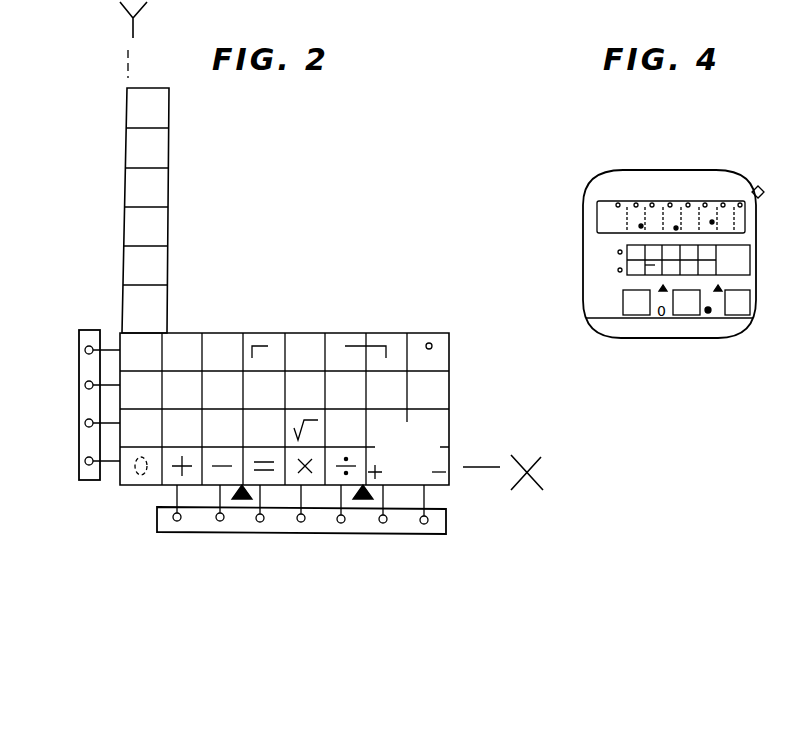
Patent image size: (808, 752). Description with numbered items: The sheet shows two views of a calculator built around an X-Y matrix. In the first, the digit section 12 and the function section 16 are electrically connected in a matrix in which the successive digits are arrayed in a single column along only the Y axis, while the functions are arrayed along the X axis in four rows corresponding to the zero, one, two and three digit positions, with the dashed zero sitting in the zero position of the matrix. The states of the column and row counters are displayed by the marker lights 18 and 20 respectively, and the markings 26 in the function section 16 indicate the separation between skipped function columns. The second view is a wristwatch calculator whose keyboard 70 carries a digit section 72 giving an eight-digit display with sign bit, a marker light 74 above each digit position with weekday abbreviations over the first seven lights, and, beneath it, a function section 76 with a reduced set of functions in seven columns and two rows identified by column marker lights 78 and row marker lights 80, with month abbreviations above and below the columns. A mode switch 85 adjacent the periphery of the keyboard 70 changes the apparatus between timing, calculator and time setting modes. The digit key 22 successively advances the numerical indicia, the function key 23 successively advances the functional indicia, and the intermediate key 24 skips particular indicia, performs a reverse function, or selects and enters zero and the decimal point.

In FIG. 2, the digit section 12 is at (168, 160).
In FIG. 2, the function section 16 is at (343, 334).
In FIG. 2, the column marker light 18 is at (190, 532).
In FIG. 2, the row marker light 20 is at (80, 433).
In FIG. 2, the markings 26 is at (242, 502).
In FIG. 4, the markings 26 is at (660, 290).
In FIG. 4, the keyboard 70 is at (715, 170).
In FIG. 4, the digit section 72 is at (598, 222).
In FIG. 4, the marker light 74 is at (636, 203).
In FIG. 4, the function section 76 is at (752, 252).
In FIG. 4, the column marker lights 78 is at (652, 270).
In FIG. 4, the row marker lights 80 is at (617, 270).
In FIG. 4, the mode switch 85 is at (775, 182).
In FIG. 4, the digit key 22 is at (650, 318).
In FIG. 4, the intermediate key 24 is at (700, 318).
In FIG. 4, the function key 23 is at (748, 318).